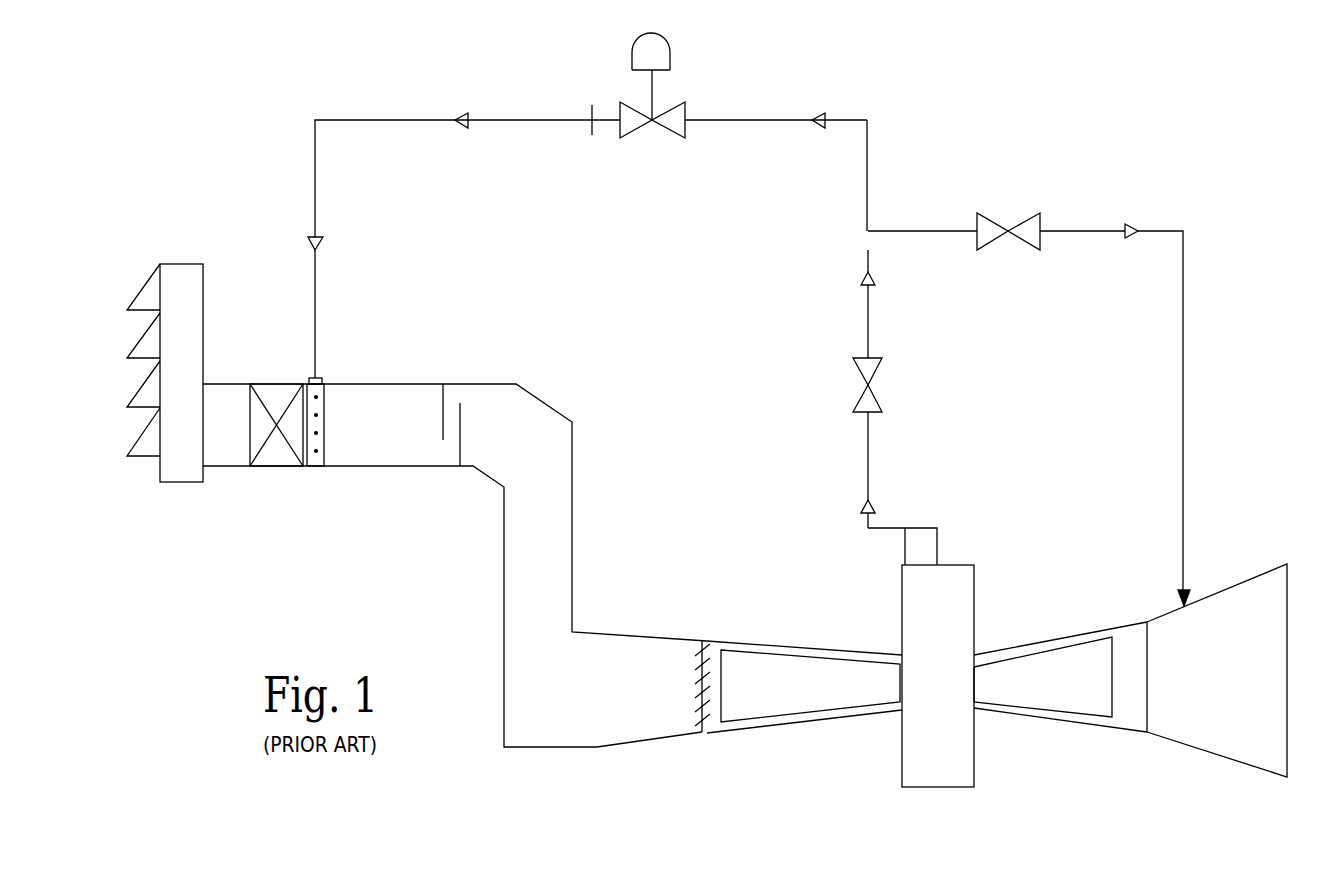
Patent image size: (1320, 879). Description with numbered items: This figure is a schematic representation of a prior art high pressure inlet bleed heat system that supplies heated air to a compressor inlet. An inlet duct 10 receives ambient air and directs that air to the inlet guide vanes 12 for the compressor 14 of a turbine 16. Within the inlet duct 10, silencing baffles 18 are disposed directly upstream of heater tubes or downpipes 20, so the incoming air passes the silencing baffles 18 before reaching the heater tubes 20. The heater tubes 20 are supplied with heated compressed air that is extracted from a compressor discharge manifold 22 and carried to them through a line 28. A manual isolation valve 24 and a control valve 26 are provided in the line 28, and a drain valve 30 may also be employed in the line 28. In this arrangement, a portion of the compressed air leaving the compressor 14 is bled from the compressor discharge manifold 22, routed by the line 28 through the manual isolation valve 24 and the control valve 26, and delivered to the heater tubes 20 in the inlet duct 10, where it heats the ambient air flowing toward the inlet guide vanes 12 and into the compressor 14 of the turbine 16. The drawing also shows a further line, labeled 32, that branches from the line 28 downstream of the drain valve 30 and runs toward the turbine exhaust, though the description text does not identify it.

The inlet duct 10 is at (262, 320).
The inlet guide vanes 12 is at (693, 660).
The compressor 14 is at (780, 665).
The turbine 16 is at (1028, 653).
The silencing baffles 18 is at (278, 458).
The heater tubes 20 is at (326, 436).
The compressor discharge manifold 22 is at (900, 607).
The manual isolation valve 24 is at (857, 370).
The control valve 26 is at (627, 134).
The line 28 is at (763, 120).
The drain valve 30 is at (988, 242).
The bypass line to exhaust 32 is at (1183, 395).